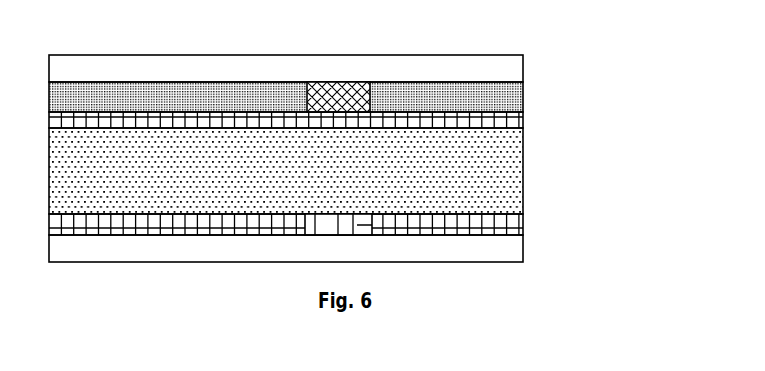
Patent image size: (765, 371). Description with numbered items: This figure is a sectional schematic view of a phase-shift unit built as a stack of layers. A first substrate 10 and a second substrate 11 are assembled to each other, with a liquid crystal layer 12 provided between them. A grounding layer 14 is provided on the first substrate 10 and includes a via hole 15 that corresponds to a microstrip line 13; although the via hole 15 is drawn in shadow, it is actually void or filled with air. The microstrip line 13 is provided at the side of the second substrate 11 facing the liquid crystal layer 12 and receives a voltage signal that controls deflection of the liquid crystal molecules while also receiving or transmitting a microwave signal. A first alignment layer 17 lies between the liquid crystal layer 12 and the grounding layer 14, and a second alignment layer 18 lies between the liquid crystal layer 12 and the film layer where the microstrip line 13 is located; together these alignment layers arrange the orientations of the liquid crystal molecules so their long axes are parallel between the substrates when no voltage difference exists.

The first substrate 10 is at (523, 73).
The second substrate 11 is at (523, 247).
The liquid crystal layer 12 is at (523, 168).
The microstrip line 13 is at (523, 225).
The grounding layer 14 is at (523, 101).
The via hole 15 is at (329, 97).
The first alignment layer 17 is at (523, 124).
The second alignment layer 18 is at (523, 219).